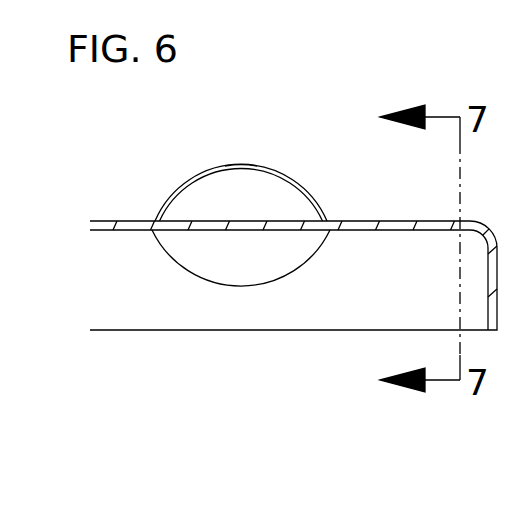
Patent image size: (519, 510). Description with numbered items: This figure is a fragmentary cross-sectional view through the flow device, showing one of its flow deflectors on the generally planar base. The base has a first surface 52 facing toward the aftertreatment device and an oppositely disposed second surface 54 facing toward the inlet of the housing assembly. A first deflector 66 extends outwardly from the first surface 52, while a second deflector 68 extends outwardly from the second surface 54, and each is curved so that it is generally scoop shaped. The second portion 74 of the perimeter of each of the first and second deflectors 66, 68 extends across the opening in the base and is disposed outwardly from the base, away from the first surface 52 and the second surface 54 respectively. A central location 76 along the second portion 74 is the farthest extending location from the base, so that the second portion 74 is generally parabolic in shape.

The first surface 52 is at (368, 222).
The second surface 54 is at (387, 230).
The first deflector 66 is at (206, 158).
The second deflector 68 is at (185, 280).
The second portion 74 is at (288, 177).
The central location 76 is at (241, 169).